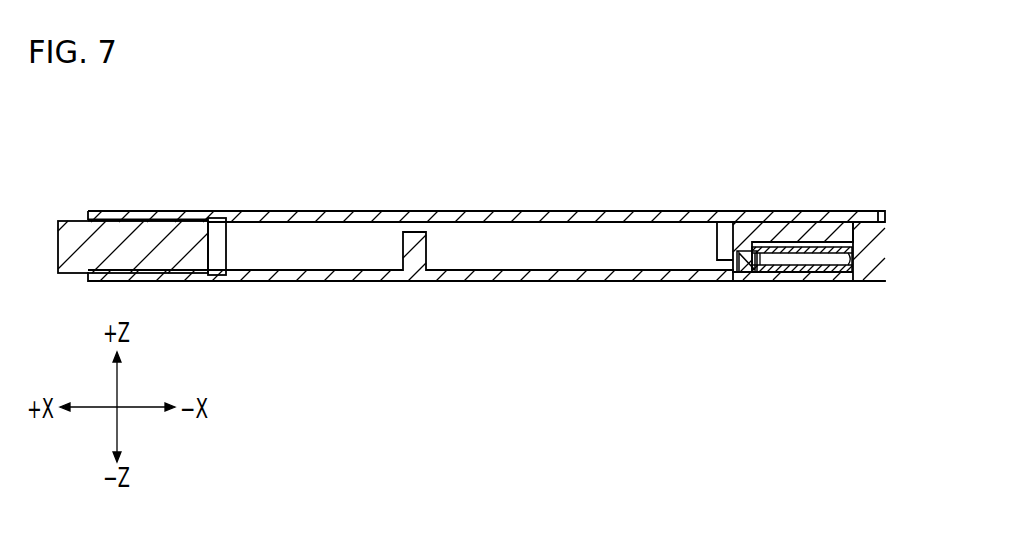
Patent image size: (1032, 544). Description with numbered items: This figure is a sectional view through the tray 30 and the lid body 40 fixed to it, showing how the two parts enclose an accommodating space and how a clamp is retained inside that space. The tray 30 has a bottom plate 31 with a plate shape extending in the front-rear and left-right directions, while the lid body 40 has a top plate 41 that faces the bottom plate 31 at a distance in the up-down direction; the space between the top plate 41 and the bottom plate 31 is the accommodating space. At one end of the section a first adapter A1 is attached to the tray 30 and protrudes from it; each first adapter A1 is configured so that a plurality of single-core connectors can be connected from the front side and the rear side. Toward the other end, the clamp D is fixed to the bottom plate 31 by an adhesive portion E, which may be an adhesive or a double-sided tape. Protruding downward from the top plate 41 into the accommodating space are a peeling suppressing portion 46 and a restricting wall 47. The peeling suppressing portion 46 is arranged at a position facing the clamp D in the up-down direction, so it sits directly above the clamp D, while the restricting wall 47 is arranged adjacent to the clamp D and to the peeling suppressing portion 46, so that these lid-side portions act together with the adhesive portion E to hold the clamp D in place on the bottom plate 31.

The first adapter A1 is at (75, 232).
The lid body 40 is at (362, 211).
The top plate 41 is at (471, 211).
The tray 30 is at (350, 281).
The bottom plate 31 is at (513, 282).
The peeling suppressing portion 46 is at (772, 232).
The restricting wall 47 is at (722, 246).
The clamp D is at (851, 261).
The adhesive portion E is at (834, 272).